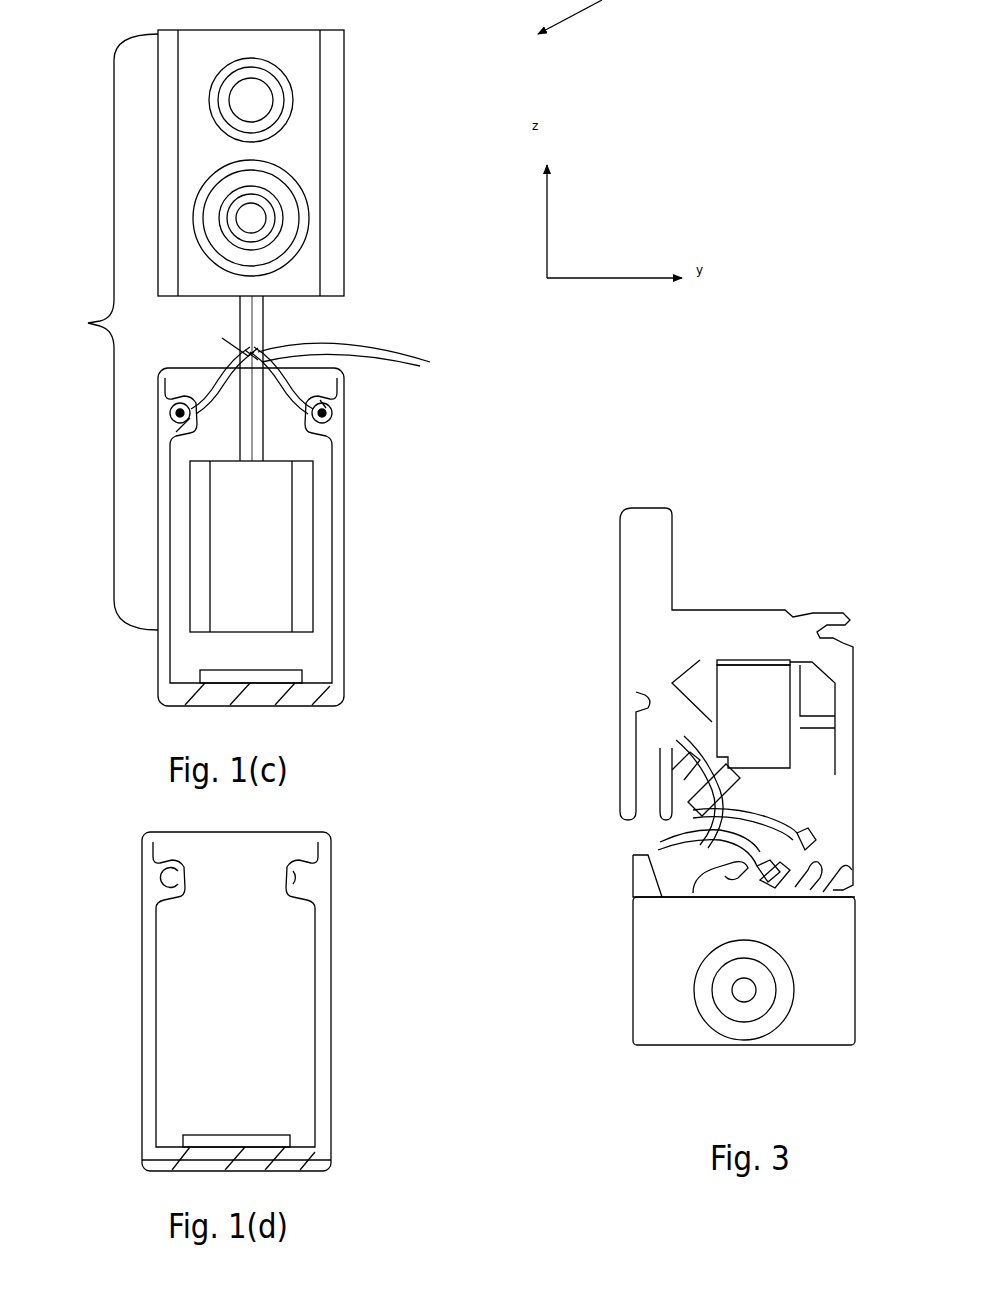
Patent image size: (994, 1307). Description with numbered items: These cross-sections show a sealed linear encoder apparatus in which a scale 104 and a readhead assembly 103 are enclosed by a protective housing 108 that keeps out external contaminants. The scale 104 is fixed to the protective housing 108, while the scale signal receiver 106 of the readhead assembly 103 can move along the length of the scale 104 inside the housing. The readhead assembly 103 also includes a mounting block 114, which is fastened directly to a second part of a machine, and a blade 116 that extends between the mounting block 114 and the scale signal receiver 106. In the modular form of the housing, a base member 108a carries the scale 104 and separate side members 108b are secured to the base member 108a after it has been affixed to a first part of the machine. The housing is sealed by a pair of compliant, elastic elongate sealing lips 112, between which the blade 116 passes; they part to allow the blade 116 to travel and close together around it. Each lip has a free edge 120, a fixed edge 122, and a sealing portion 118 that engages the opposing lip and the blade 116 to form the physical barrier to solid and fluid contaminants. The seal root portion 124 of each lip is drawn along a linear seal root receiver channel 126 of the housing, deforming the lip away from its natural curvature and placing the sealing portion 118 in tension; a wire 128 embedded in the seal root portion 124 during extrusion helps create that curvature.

In FIG. 1C, the readhead assembly 103 is at (93, 332).
In FIG. 1C, the scale 104 is at (292, 682).
In FIG. 1D, the scale 104 is at (290, 1145).
In FIG. 3, the scale 104 is at (737, 658).
In FIG. 1C, the scale signal receiver 106 is at (318, 504).
In FIG. 3, the scale signal receiver 106 is at (776, 690).
In FIG. 1C, the protective housing 108 is at (343, 590).
In FIG. 3, the protective housing 108 is at (815, 612).
In FIG. 1D, the base member 108a is at (302, 1178).
In FIG. 1D, the side members 108b is at (306, 1020).
In FIG. 1C, the elongate sealing lips 112 is at (331, 378).
In FIG. 3, the elongate sealing lips 112 is at (660, 750).
In FIG. 3, the mounting block 114 is at (655, 960).
In FIG. 1C, the blade 116 is at (268, 306).
In FIG. 1C, the sealing portion 118 is at (209, 336).
In FIG. 3, the sealing portion 118 is at (680, 822).
In FIG. 1C, the free edge 120 is at (258, 350).
In FIG. 1C, the fixed edge 122 is at (334, 407).
In FIG. 1C, the seal root portion 124 is at (335, 416).
In FIG. 1C, the seal root receiver channels 126 is at (166, 412).
In FIG. 1C, the wire 128 is at (178, 428).